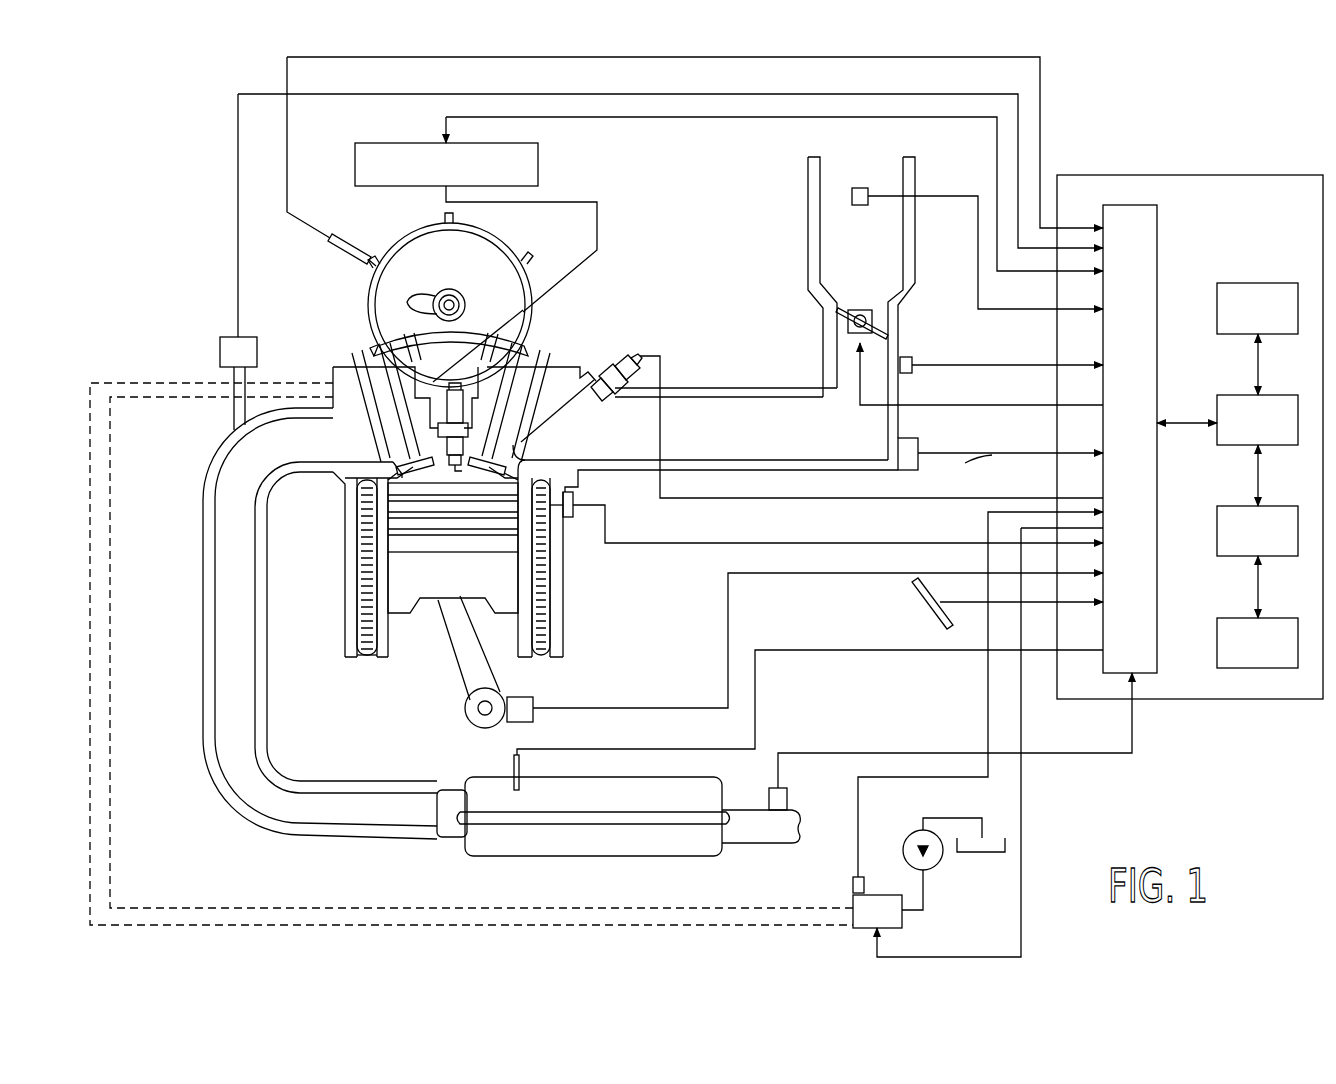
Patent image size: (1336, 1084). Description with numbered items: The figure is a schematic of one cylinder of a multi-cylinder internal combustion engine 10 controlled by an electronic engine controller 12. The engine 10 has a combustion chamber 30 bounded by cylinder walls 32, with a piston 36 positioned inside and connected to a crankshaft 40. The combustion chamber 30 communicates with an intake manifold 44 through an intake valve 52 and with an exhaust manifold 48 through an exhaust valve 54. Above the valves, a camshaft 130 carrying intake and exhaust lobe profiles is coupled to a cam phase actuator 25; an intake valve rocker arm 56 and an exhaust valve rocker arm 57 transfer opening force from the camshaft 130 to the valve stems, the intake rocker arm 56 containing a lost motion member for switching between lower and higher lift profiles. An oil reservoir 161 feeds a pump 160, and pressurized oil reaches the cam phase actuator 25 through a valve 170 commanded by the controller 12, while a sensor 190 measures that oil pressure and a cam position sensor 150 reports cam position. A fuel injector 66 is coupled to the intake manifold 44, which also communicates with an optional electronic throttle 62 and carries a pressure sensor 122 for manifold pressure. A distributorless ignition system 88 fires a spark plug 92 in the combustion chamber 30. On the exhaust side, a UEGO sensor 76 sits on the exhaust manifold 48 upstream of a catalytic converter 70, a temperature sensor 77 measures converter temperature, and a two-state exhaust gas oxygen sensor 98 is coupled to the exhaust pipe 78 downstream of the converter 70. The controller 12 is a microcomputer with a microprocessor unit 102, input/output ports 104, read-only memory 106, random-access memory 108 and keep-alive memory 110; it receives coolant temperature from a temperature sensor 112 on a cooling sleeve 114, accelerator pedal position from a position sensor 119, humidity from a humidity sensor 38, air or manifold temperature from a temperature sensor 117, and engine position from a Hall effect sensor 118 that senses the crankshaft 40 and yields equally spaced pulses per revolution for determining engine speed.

The internal combustion engine 10 is at (333, 362).
The electronic engine controller 12 is at (1151, 175).
The cam phase actuator 25 is at (480, 300).
The combustion chamber 30 is at (450, 483).
The cylinder walls 32 is at (390, 657).
The piston 36 is at (452, 573).
The humidity sensor 38 is at (858, 188).
The crankshaft 40 is at (465, 712).
The intake manifold 44 is at (766, 448).
The exhaust manifold 48 is at (228, 560).
The intake valve 52 is at (497, 458).
The exhaust valve 54 is at (410, 458).
The intake valve rocker arm 56 is at (526, 351).
The exhaust valve rocker arm 57 is at (396, 364).
The electronic throttle 62 is at (843, 306).
The fuel injector 66 is at (620, 360).
The catalytic converter 70 is at (502, 856).
The UEGO sensor 76 is at (220, 350).
The temperature sensor 77 is at (512, 778).
The exhaust pipe 78 is at (757, 844).
The distributorless ignition system 88 is at (538, 166).
The spark plug 92 is at (507, 380).
The two-state exhaust gas oxygen sensor 98 is at (788, 790).
The microprocessor unit 102 is at (1280, 395).
The input/output ports 104 is at (1160, 252).
The read-only memory 106 is at (1255, 283).
The random-access memory 108 is at (1280, 506).
The keep-alive memory 110 is at (1280, 618).
The temperature sensor 112 is at (575, 500).
The cooling sleeve 114 is at (362, 662).
The temperature sensor 117 is at (910, 355).
The Hall effect sensor 118 is at (535, 702).
The position sensor 119 is at (913, 611).
The pressure sensor 122 is at (920, 444).
The camshaft 130 is at (405, 301).
The cam position sensor 150 is at (364, 250).
The pump 160 is at (928, 865).
The oil reservoir 161 is at (990, 858).
The valve 170 is at (853, 902).
The sensor 190 is at (853, 877).